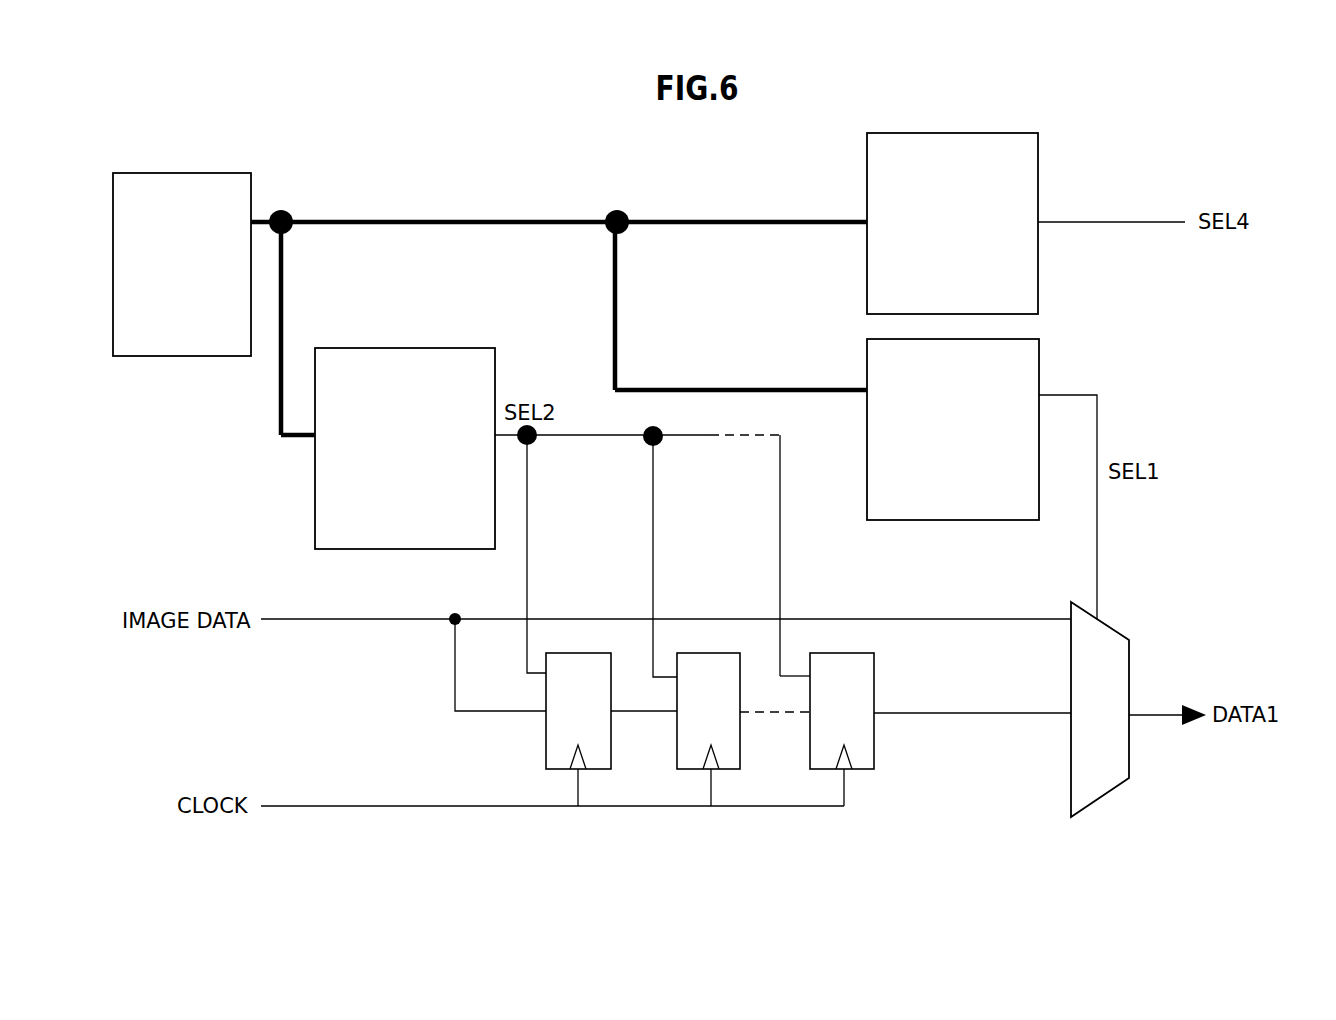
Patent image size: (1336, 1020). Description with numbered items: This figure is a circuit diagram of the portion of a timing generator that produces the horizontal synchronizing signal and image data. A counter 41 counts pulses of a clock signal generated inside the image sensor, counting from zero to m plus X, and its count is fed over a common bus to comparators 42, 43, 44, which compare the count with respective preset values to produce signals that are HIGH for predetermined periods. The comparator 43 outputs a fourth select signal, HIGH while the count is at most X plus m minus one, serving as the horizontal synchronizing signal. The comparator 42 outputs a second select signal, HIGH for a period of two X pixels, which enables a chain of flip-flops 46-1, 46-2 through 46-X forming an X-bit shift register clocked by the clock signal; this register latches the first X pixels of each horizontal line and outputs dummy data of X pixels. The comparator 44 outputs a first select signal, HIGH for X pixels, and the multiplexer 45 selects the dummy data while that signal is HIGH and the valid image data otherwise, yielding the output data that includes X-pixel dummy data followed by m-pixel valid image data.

The counter 41 is at (205, 173).
The comparator 42 is at (437, 348).
The comparator 43 is at (1038, 147).
The comparator 44 is at (1039, 352).
The multiplexer 45 is at (1118, 633).
The flip-flop 46-1 is at (585, 653).
The flip-flop 46-2 is at (715, 653).
The flip-flop 46-X is at (845, 653).